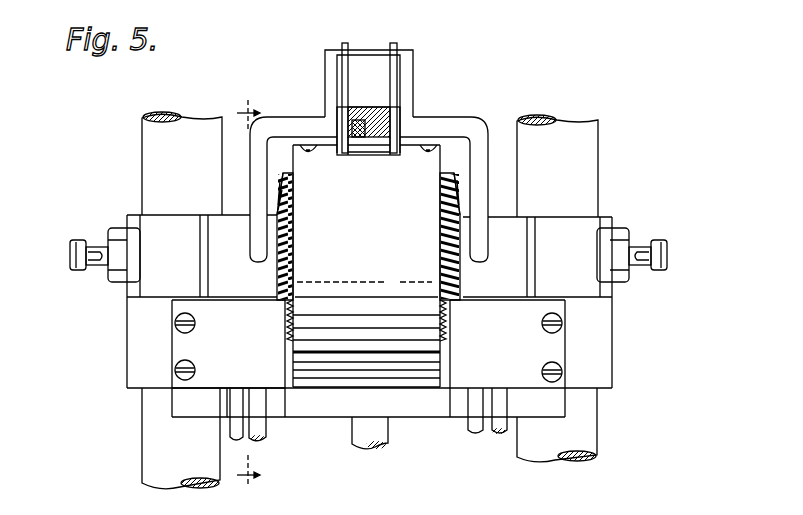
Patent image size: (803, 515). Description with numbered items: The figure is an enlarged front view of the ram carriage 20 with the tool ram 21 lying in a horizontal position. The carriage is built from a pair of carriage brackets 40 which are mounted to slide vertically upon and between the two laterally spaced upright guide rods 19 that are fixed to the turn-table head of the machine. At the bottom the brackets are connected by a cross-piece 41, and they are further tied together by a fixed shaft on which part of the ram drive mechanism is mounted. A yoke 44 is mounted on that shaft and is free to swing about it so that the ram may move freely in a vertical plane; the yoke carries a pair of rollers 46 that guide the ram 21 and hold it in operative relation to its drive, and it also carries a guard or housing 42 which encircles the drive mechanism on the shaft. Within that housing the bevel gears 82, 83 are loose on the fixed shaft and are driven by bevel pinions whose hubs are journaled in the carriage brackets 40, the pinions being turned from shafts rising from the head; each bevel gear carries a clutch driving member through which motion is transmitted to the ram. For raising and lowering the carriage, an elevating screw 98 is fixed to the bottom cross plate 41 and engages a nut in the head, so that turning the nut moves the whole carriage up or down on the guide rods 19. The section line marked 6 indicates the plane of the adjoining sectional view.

The guide rods 19 is at (150, 150).
The ram carriage 20 is at (543, 342).
The tool ram 21 is at (377, 128).
The carriage brackets 40 is at (140, 372).
The cross-piece 41 is at (327, 410).
The guard or housing 42 is at (445, 323).
The yoke 44 is at (470, 128).
The rollers 46 is at (395, 45).
The bevel gear 82 is at (465, 278).
The bevel gear 83 is at (275, 262).
The elevating screw 98 is at (358, 437).
The section line 6 is at (246, 294).